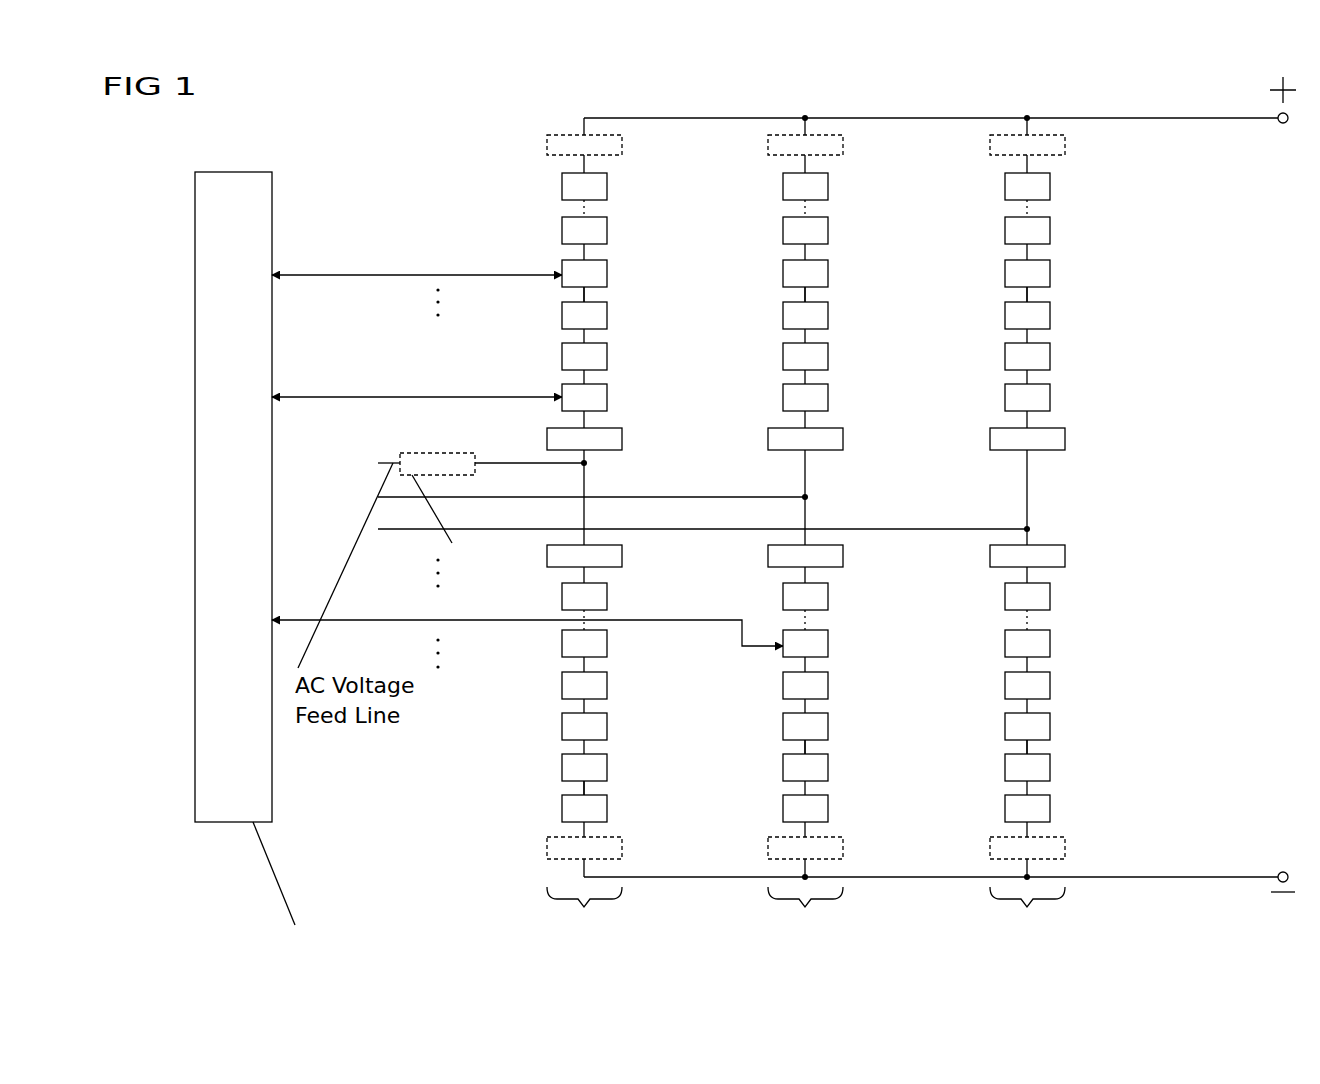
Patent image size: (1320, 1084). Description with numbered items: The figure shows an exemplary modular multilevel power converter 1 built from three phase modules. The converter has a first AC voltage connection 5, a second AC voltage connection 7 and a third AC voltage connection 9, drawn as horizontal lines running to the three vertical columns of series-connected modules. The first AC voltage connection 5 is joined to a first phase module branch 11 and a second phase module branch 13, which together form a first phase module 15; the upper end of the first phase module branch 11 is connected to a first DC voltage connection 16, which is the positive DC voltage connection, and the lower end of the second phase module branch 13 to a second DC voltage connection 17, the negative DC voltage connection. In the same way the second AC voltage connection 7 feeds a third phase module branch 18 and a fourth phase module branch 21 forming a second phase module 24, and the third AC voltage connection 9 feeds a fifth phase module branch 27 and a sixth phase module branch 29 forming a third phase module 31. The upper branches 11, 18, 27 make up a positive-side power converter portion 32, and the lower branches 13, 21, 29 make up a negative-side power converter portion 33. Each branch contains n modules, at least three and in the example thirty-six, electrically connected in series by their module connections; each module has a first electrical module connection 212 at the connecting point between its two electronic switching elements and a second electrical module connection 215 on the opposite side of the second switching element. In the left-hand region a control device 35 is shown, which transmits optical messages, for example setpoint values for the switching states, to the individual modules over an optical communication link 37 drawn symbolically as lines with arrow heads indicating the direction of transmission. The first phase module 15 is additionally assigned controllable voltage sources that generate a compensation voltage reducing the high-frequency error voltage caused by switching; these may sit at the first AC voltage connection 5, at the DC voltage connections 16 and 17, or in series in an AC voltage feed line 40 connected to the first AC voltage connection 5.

The power converter 1 is at (514, 170).
The first AC voltage connection 5 is at (578, 467).
The second AC voltage connection 7 is at (810, 498).
The third AC voltage connection 9 is at (1032, 528).
The first phase module branch 11 is at (640, 413).
The second phase module branch 13 is at (622, 822).
The first phase module 15 is at (584, 914).
The first DC voltage connection 16 is at (1188, 118).
The second DC voltage connection 17 is at (1188, 878).
The third phase module branch 18 is at (843, 413).
The fourth phase module branch 21 is at (852, 822).
The second phase module 24 is at (805, 914).
The fifth phase module branch 27 is at (1068, 413).
The sixth phase module branch 29 is at (1077, 822).
The third phase module 31 is at (1027, 914).
The positive-side power converter portion 32 is at (540, 356).
The negative-side power converter portion 33 is at (547, 735).
The control device 35 is at (233, 823).
The optical communication link 37 is at (375, 275).
The AC voltage feed line 40 is at (393, 455).
The first electrical module connection 212 is at (584, 297).
The second electrical module connection 215 is at (578, 333).